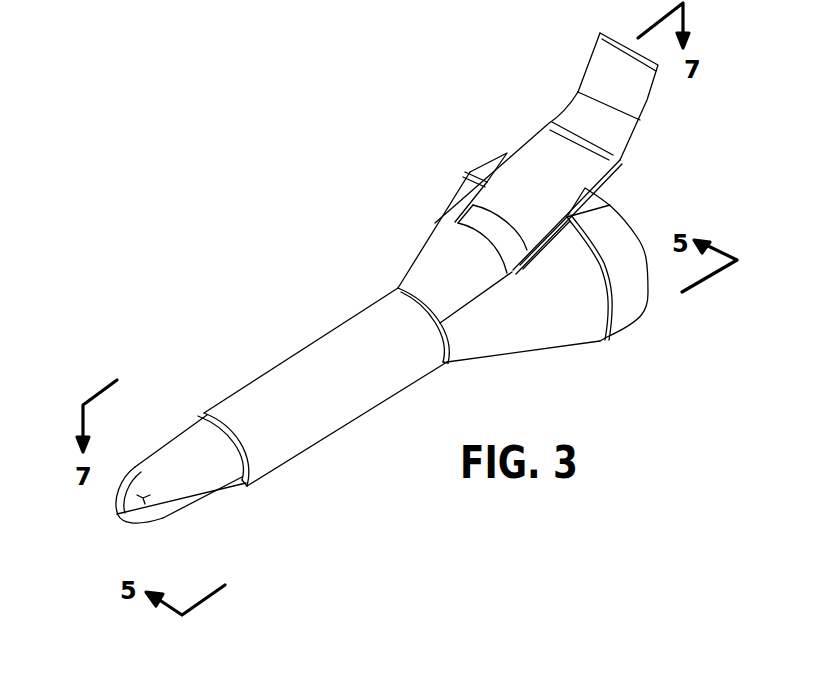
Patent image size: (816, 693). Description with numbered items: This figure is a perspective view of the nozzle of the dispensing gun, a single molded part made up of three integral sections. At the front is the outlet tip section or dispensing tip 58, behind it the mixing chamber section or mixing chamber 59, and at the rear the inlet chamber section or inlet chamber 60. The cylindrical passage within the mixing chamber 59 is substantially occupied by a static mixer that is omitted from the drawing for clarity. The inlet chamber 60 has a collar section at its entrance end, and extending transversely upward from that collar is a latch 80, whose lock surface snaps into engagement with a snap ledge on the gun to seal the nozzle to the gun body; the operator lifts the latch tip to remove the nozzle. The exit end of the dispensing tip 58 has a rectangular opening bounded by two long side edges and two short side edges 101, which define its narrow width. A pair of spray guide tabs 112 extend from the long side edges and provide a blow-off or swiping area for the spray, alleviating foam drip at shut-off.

The outlet tip section 58 is at (172, 433).
The mixing chamber section 59 is at (305, 346).
The inlet chamber section 60 is at (435, 223).
The latch 80 is at (515, 158).
The short side edges 101 is at (130, 478).
The spray guide tabs 112 is at (117, 513).